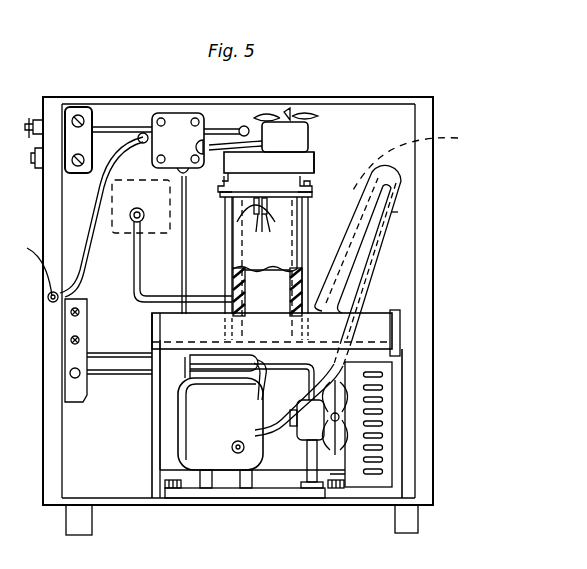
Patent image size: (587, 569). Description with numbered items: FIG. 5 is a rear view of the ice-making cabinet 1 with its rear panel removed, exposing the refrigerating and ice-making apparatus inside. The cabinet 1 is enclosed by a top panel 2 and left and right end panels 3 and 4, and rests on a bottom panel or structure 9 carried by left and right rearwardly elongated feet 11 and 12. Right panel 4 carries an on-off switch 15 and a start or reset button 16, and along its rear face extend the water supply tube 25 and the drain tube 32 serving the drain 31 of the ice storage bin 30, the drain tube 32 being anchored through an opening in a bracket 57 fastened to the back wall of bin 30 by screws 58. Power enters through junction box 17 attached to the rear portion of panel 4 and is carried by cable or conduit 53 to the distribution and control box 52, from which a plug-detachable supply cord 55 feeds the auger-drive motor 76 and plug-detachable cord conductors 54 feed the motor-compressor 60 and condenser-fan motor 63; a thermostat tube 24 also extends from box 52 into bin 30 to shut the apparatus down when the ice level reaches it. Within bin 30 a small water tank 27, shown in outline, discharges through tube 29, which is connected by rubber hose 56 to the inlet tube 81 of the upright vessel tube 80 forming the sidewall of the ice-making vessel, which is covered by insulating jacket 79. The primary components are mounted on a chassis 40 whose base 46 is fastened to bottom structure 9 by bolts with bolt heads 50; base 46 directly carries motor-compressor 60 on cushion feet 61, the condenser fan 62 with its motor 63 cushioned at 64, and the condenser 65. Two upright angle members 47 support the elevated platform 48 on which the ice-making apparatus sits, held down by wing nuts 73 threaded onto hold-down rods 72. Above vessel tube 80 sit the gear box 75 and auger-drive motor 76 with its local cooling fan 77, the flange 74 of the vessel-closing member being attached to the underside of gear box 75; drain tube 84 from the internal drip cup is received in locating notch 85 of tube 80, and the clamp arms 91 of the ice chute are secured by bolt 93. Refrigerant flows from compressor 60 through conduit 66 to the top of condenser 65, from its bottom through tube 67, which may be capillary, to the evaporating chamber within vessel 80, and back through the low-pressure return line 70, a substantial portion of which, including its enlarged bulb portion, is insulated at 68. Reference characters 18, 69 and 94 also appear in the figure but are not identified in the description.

The cabinet 1 is at (417, 96).
The top panel 2 is at (380, 98).
The left end panel 3 is at (430, 485).
The right end panel 4 is at (50, 427).
The bottom panel 9 is at (131, 506).
The left foot 11 is at (400, 512).
The right foot 12 is at (70, 526).
The on-off switch 15 is at (30, 122).
The start or reset button 16 is at (36, 155).
The junction box 17 is at (80, 112).
The support lug 18 is at (227, 176).
The thermostat tube 24 is at (231, 128).
The supply tube 25 is at (84, 221).
The water tank 27 is at (135, 220).
The tube 29 is at (143, 221).
The ice storage compartment 30 is at (95, 341).
The drain 31 is at (150, 333).
The drain tube 32 is at (126, 374).
The chassis 40 is at (152, 433).
The base 46 is at (268, 498).
The upright angle members 47 is at (403, 452).
The elevated platform support 48 is at (400, 328).
The bolt heads 50 is at (175, 489).
The distribution and control box 52 is at (172, 118).
The cable or conduit 53 is at (121, 127).
The cord conductors 54 is at (225, 207).
The supply cord 55 is at (212, 146).
The rubber hose 56 is at (134, 272).
The bracket 57 is at (71, 322).
The screws 58 is at (79, 312).
The motor-compressor 60 is at (224, 426).
The cushion feet 61 is at (208, 488).
The condenser fan 62 is at (332, 388).
The condenser-fan motor 63 is at (306, 418).
The cushion 64 is at (312, 488).
The condenser 65 is at (372, 410).
The conduit 66 is at (246, 372).
The tube 67 is at (346, 472).
The insulating cover 68 is at (384, 253).
The coil cover 69 is at (420, 160).
The return line 70 is at (400, 212).
The hold-down rods 72 is at (225, 222).
The wing nuts 73 is at (222, 186).
The flange 74 is at (269, 162).
The gear box 75 is at (315, 160).
The auger-drive motor 76 is at (309, 134).
The local cooling fan 77 is at (312, 116).
The insulating jacket 79 is at (234, 244).
The vessel tube 80 is at (252, 276).
The inlet tube 81 is at (248, 304).
The drain tube 84 is at (247, 210).
The locating notch 85 is at (280, 210).
The clamp arms 91 is at (261, 234).
The bolt 93 is at (275, 227).
The lead 94 is at (251, 227).